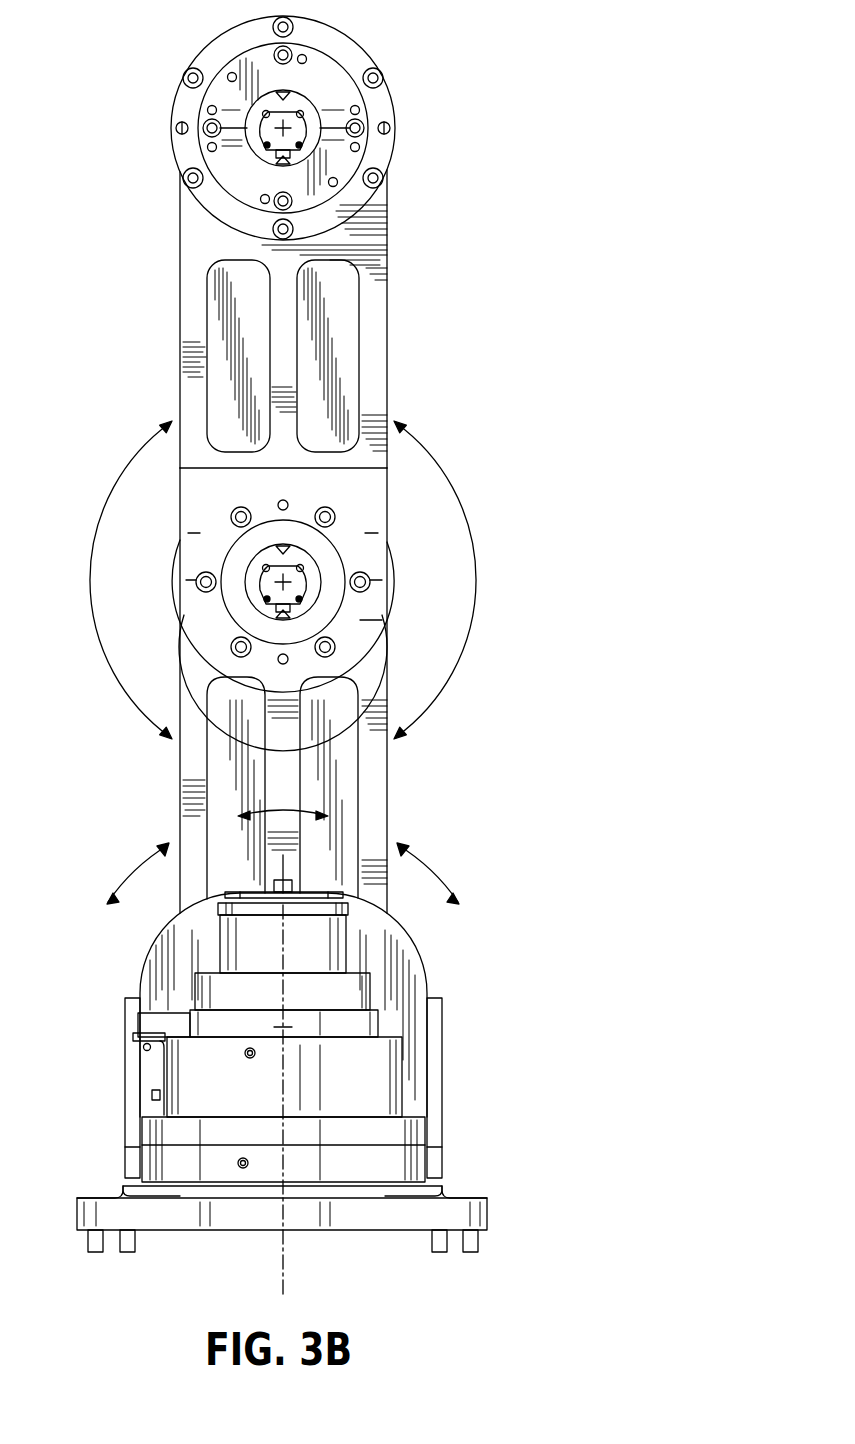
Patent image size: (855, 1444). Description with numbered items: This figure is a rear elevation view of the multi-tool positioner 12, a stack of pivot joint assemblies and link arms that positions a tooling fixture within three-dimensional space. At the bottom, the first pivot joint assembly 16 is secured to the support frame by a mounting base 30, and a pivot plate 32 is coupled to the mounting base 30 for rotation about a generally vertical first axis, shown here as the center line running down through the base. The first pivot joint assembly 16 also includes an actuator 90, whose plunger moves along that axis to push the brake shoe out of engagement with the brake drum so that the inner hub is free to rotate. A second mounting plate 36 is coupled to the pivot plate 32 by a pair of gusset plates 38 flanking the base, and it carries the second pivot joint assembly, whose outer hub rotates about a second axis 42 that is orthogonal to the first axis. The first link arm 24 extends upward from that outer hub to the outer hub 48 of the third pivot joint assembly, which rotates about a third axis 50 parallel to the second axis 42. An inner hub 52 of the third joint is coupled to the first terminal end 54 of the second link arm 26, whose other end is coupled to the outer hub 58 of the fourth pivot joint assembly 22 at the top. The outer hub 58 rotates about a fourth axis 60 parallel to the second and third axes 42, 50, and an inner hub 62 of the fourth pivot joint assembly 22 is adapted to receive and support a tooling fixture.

The multi-tool positioner 12 is at (608, 96).
The first pivot joint assembly 16 is at (494, 990).
The fourth pivot joint assembly 22 is at (172, 173).
The first link arm 24 is at (176, 751).
The second link arm 26 is at (176, 373).
The mounting base 30 is at (482, 1203).
The pivot plate 32 is at (418, 1136).
The second mounting plate 36 is at (426, 965).
The gusset plates 38 is at (125, 1060).
The second axis 42 is at (283, 1025).
The outer hub 48 is at (395, 556).
The third axis 50 is at (277, 572).
The inner hub 52 is at (233, 597).
The first terminal end 54 is at (372, 602).
The outer hub 58 is at (395, 100).
The fourth axis 60 is at (281, 126).
The inner hub 62 is at (352, 161).
The actuator 90 is at (218, 943).